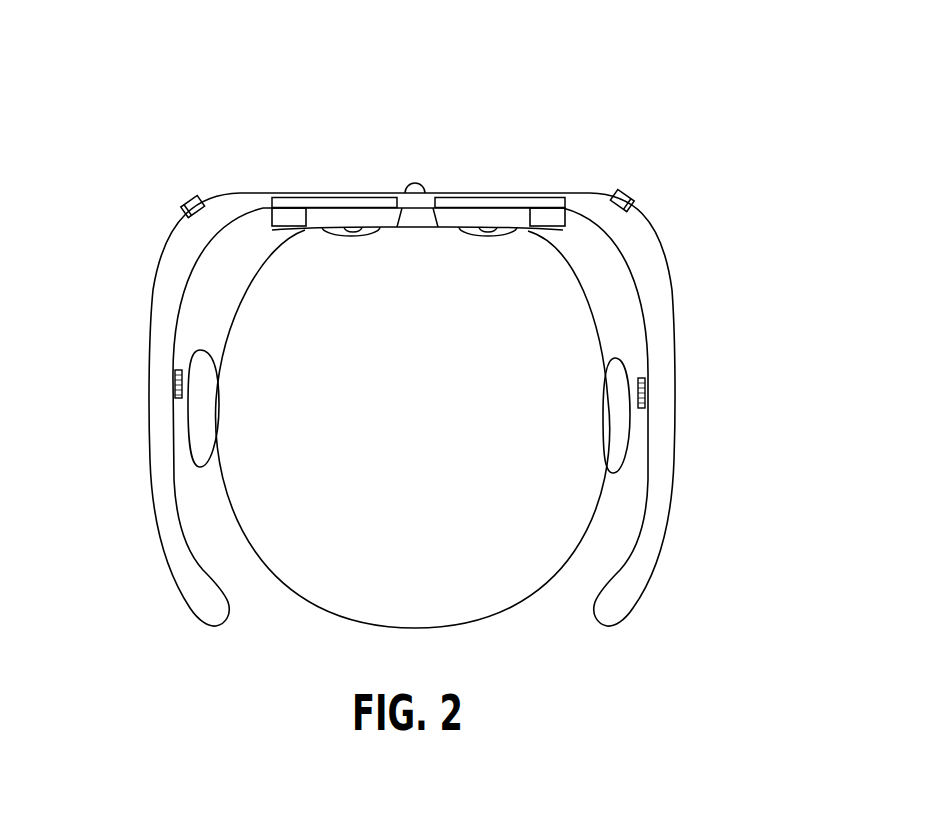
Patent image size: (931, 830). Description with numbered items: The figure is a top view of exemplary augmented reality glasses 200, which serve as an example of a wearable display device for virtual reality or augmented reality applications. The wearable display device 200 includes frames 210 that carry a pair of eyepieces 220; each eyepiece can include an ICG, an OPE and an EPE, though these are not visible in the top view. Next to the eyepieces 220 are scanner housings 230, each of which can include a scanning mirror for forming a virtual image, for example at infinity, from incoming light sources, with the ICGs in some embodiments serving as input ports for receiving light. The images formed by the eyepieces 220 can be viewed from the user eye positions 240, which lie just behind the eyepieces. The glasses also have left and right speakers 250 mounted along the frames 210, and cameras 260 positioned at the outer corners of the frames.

The augmented reality glasses 200 is at (705, 54).
The frames 210 is at (658, 550).
The eyepieces 220 is at (508, 142).
The scanner housings 230 is at (640, 137).
The user eye positions 240 is at (495, 246).
The left and right speakers 250 is at (178, 372).
The cameras 260 is at (708, 164).